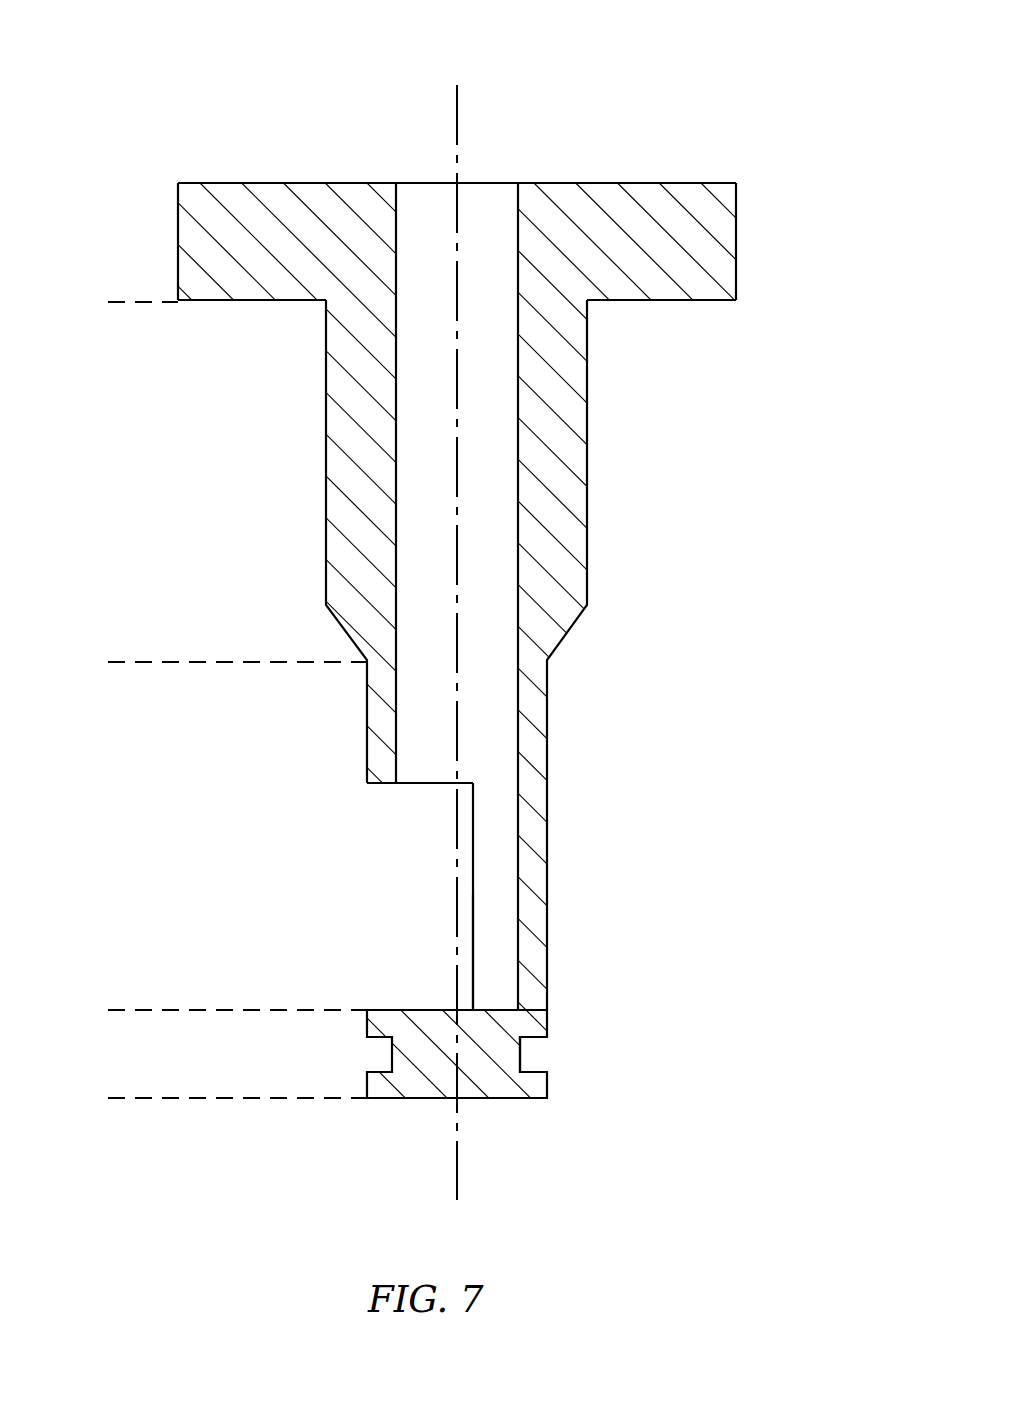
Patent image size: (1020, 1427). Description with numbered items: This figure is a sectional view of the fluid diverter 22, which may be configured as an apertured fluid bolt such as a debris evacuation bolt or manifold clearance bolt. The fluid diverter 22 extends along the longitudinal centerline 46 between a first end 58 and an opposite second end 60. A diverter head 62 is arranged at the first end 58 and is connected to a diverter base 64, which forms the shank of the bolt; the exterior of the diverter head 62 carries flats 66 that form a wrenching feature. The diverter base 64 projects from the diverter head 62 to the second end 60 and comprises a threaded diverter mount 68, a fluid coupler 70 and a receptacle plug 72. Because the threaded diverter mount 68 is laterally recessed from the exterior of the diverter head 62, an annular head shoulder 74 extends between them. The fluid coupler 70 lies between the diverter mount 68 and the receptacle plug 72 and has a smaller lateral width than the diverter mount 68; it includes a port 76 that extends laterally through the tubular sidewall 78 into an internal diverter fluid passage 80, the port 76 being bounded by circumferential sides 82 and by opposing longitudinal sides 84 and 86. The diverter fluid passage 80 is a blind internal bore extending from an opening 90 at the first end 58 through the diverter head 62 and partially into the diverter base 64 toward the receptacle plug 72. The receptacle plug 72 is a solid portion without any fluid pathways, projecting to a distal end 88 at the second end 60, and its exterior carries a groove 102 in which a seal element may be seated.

The fluid diverter 22 is at (510, 594).
The longitudinal centerline 46 is at (458, 93).
The first end 58 is at (310, 183).
The second end 60 is at (388, 1098).
The diverter head 62 is at (463, 246).
The diverter base 64 is at (531, 741).
The flats 66 is at (178, 240).
The diverter mount 68 is at (108, 302).
The fluid coupler 70 is at (108, 662).
The receptacle plug 72 is at (108, 1010).
The head shoulder 74 is at (233, 302).
The port 76 is at (353, 823).
The tubular sidewall 78 is at (540, 743).
The diverter fluid passage 80 is at (462, 555).
The circumferential sides 82 is at (473, 896).
The first longitudinal side 84 is at (367, 786).
The second longitudinal side 86 is at (385, 1010).
The distal end 88 is at (457, 1140).
The opening 90 is at (410, 183).
The groove 102 is at (542, 1054).